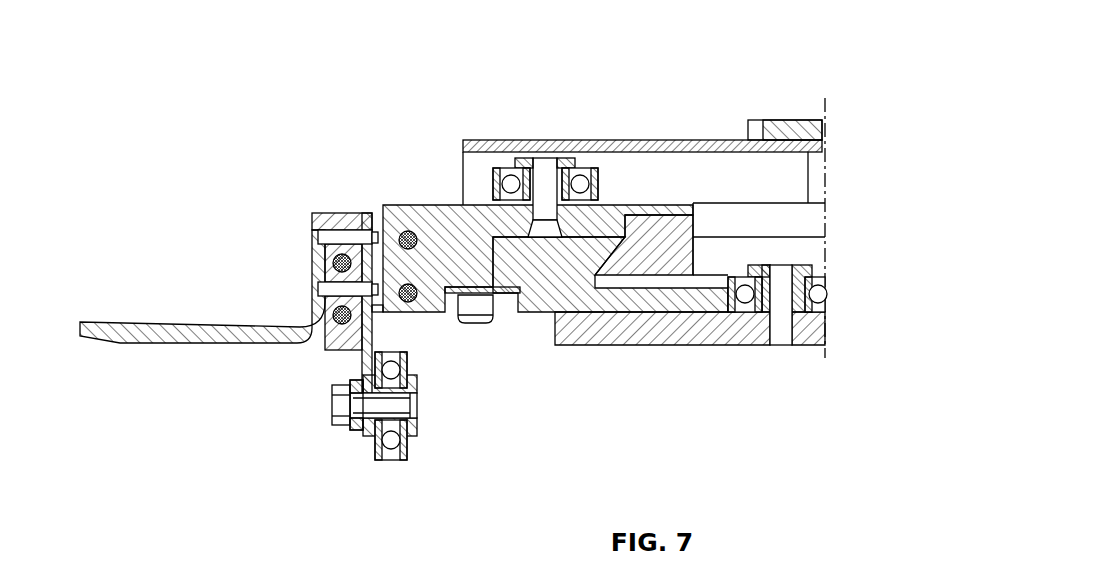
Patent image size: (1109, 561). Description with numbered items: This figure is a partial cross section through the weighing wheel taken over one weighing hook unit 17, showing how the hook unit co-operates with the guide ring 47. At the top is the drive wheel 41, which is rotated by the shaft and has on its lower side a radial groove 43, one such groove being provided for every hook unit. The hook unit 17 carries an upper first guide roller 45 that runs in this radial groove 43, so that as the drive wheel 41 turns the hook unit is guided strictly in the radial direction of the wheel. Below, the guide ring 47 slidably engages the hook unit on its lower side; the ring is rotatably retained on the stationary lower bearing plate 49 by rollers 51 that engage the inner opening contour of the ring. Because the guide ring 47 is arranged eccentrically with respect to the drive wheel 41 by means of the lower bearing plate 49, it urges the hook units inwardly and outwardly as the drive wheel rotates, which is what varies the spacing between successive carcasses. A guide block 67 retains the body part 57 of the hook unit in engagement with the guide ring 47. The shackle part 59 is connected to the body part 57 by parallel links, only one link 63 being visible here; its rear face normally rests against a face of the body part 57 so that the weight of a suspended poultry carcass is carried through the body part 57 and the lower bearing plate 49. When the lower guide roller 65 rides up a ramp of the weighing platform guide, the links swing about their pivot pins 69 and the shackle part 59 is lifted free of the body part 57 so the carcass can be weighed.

The hook unit 17 is at (453, 280).
The drive wheel 41 is at (706, 140).
The radial grooves 43 is at (652, 175).
The upper first guide roller 45 is at (498, 167).
The guide ring 47 is at (538, 277).
The lower bearing plate 49 is at (620, 327).
The rollers 51 is at (733, 277).
The body part 57 is at (443, 242).
The shackle part 59 is at (167, 337).
The parallel link 63 is at (395, 315).
The lower guide roller 65 is at (407, 455).
The guide block 67 is at (660, 253).
The pivot pins 69 is at (408, 231).